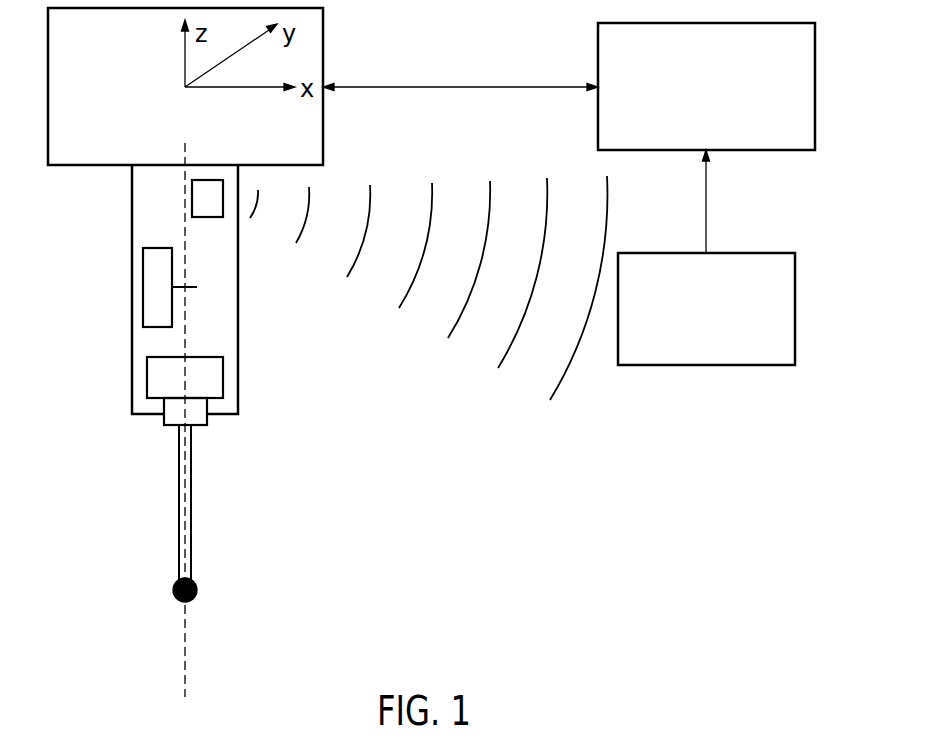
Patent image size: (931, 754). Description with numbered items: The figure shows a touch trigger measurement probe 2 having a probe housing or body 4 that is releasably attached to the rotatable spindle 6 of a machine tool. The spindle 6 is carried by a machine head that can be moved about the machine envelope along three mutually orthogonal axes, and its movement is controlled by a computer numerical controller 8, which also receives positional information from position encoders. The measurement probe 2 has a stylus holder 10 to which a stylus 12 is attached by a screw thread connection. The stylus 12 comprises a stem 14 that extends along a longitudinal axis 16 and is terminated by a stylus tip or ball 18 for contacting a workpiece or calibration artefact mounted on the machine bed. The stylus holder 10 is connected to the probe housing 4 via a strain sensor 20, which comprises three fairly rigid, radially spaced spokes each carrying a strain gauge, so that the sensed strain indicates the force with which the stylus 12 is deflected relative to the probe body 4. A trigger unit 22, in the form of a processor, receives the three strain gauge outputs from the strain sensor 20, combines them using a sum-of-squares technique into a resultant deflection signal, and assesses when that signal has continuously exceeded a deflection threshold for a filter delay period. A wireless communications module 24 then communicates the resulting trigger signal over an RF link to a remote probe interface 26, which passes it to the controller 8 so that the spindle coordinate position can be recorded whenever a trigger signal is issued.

The touch trigger measurement probe 2 is at (264, 374).
The probe housing 4 is at (132, 263).
The rotatable spindle 6 is at (89, 123).
The computer numerical controller 8 is at (697, 100).
The stylus holder 10 is at (163, 425).
The stylus 12 is at (150, 556).
The stem 14 is at (192, 500).
The longitudinal axis 16 is at (188, 673).
The stylus tip or ball 18 is at (198, 590).
The strain sensor 20 is at (147, 368).
The trigger unit 22 is at (143, 288).
The wireless communications module 24 is at (191, 193).
The remote probe interface 26 is at (689, 325).